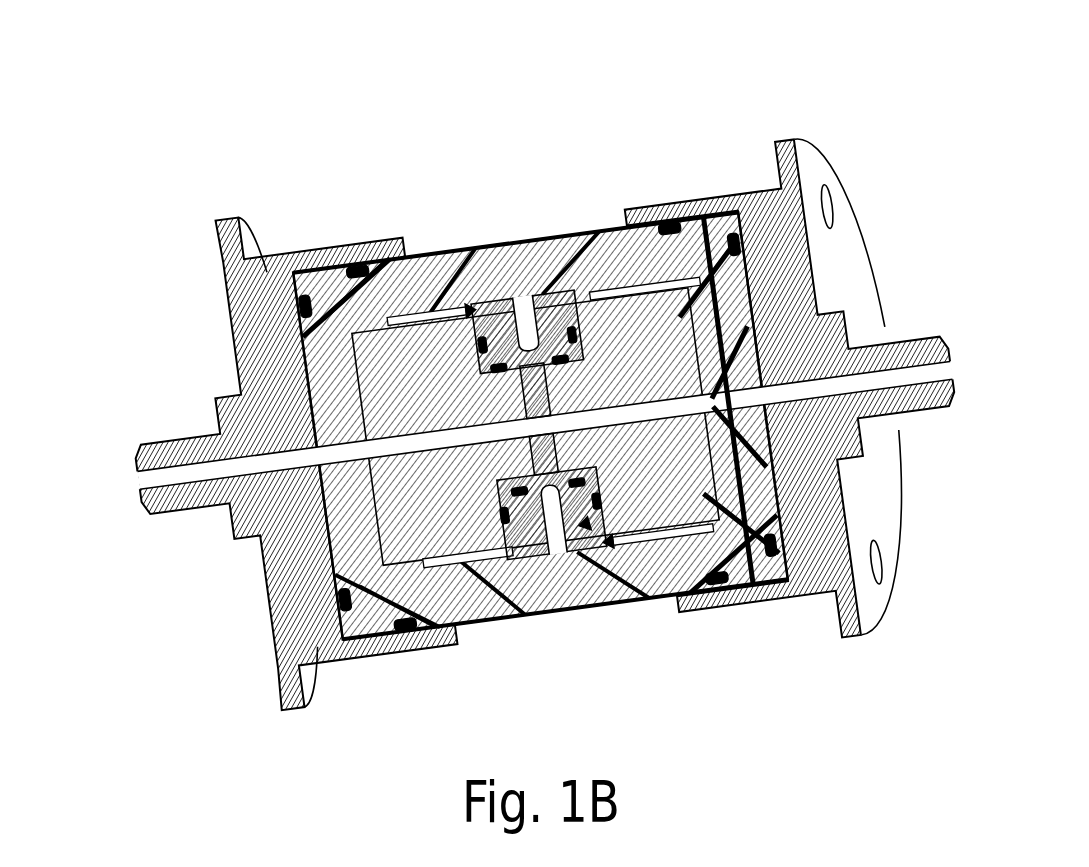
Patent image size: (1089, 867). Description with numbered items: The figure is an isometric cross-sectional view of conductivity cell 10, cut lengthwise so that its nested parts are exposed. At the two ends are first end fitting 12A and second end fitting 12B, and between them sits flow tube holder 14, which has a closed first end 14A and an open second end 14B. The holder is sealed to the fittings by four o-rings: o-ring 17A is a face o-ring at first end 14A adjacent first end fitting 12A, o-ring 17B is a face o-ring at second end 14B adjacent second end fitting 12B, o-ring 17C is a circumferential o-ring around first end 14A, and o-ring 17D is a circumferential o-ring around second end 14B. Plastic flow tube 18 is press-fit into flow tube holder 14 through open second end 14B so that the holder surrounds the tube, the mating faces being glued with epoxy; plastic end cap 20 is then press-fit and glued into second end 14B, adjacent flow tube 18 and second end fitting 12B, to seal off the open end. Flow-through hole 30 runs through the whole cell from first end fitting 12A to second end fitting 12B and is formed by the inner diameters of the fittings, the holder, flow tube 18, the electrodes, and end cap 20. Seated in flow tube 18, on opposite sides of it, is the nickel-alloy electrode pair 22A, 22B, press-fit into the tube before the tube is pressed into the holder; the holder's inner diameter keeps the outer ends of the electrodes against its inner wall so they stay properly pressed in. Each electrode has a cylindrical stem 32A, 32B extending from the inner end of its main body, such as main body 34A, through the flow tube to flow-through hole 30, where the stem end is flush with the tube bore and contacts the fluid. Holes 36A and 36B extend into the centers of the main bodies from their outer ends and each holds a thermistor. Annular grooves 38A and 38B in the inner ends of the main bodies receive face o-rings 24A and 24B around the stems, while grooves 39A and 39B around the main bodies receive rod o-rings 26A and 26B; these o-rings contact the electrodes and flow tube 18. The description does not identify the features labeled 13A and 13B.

The conductivity cell 10 is at (128, 128).
The first end fitting 12A is at (255, 345).
The second end fitting 12B is at (777, 251).
The first port 13A is at (165, 440).
The second port 13B is at (893, 345).
The flow tube holder 14 is at (652, 566).
The first end 14A is at (323, 378).
The second end 14B is at (790, 576).
The o-ring 17A is at (335, 598).
The o-ring 17B is at (778, 543).
The o-ring 17C is at (470, 606).
The o-ring 17D is at (728, 578).
The flow tube 18 is at (763, 577).
The end cap 20 is at (757, 468).
The electrode 22A is at (413, 257).
The electrode 22B is at (622, 560).
The face o-ring 24A is at (530, 330).
The face o-ring 24B is at (588, 548).
The rod o-ring 26A is at (545, 300).
The rod o-ring 26B is at (535, 562).
The flow-through hole 30 is at (932, 369).
The stem 32A is at (330, 330).
The stem 32B is at (688, 560).
The main body 34A is at (480, 318).
The hole 36A is at (520, 318).
The hole 36B is at (562, 556).
The groove 38A is at (592, 300).
The groove 38B is at (485, 592).
The groove 39A is at (562, 340).
The groove 39B is at (505, 572).